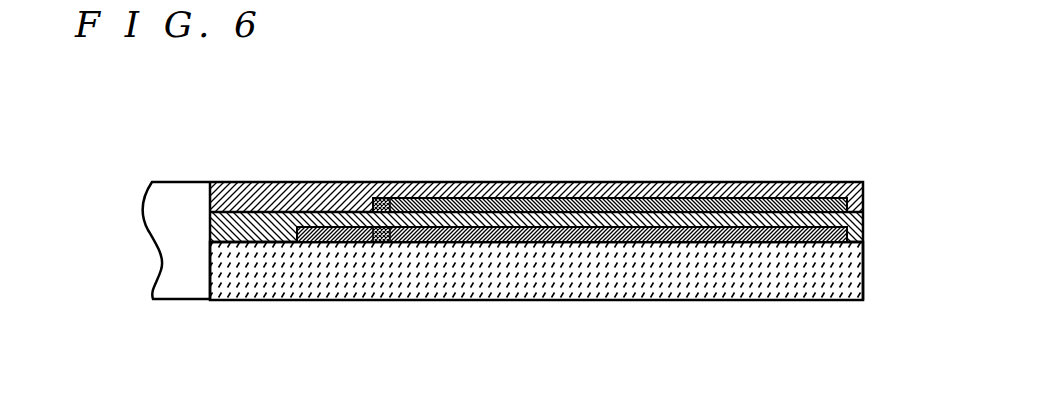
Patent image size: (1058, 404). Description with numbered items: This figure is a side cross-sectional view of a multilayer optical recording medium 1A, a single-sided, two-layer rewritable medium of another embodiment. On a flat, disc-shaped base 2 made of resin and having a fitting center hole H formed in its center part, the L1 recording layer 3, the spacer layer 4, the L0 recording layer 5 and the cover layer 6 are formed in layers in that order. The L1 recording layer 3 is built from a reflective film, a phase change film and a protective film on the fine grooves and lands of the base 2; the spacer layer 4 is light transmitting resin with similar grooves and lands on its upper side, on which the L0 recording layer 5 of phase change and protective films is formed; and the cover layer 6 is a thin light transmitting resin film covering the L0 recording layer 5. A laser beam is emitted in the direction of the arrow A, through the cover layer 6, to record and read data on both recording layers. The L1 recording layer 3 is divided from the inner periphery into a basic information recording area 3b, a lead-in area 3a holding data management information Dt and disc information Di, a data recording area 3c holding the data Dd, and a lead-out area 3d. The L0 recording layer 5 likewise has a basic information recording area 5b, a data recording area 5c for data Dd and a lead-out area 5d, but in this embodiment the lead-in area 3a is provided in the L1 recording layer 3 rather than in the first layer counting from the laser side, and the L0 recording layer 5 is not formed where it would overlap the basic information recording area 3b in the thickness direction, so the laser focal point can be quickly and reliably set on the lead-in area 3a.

The multilayer optical recording medium 1A is at (555, 90).
The base 2 is at (838, 272).
The L1 recording layer 3 is at (589, 296).
The lead-in area 3a is at (338, 241).
The basic information recording area 3b is at (385, 242).
The data recording area 3c is at (574, 242).
The lead-out area 3d is at (814, 242).
The spacer layer 4 is at (858, 228).
The L0 recording layer 5 is at (650, 168).
The basic information recording area 5b is at (383, 198).
The data recording area 5c is at (573, 198).
The lead-out area 5d is at (814, 198).
The cover layer 6 is at (864, 184).
The fitting center hole H is at (182, 236).
The arrow A is at (695, 58).